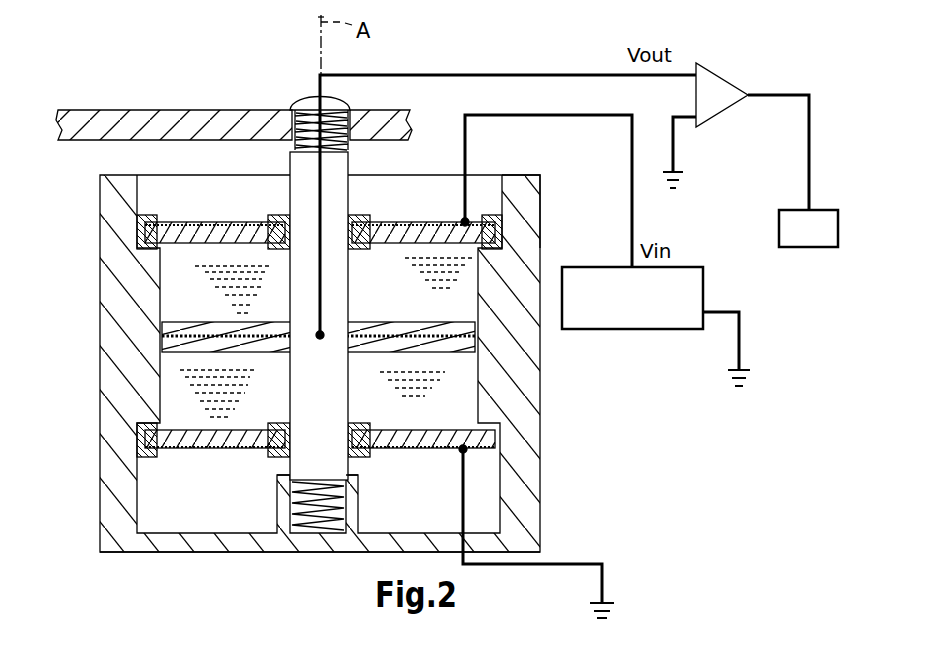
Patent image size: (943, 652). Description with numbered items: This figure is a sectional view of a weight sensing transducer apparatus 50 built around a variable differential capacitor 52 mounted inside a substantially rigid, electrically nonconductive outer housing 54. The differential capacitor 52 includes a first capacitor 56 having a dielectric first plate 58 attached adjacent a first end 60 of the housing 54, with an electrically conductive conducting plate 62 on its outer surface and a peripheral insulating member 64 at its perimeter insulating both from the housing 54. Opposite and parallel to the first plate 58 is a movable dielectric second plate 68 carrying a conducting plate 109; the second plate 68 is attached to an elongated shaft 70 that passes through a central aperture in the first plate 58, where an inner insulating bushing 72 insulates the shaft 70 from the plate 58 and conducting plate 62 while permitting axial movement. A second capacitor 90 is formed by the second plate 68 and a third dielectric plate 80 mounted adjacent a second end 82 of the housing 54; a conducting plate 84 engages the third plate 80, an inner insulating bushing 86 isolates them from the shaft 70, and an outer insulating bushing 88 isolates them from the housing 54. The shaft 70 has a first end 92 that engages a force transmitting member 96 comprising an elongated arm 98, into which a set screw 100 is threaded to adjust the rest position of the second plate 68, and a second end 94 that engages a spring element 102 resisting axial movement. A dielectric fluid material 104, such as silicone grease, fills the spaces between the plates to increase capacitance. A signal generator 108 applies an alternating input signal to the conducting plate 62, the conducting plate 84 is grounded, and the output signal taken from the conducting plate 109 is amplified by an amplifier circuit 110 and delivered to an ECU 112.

The weight sensing transducer apparatus 50 is at (585, 378).
The variable differential capacitor 52 is at (388, 210).
The outer housing 54 is at (540, 390).
The first capacitor 56 is at (185, 273).
The first plate 58 is at (478, 235).
The first end 60 is at (525, 175).
The conducting plate 62 is at (318, 213).
The peripheral insulating member 64 is at (142, 228).
The second plate 68 is at (470, 347).
The shaft 70 is at (330, 405).
The inner insulating bushing 72 is at (356, 250).
The third plate 80 is at (482, 440).
The second end 82 is at (122, 552).
The conducting plate 84 is at (172, 452).
The inner insulating bushing 86 is at (354, 456).
The outer insulating bushing 88 is at (142, 437).
The second capacitor 90 is at (185, 405).
The first end 92 is at (345, 140).
The second end 94 is at (292, 487).
The force transmitting member 96 is at (385, 110).
The elongated arm 98 is at (168, 110).
The set screw 100 is at (306, 93).
The spring element 102 is at (322, 515).
The fluid material 104 is at (130, 345).
The signal generator 108 is at (703, 285).
The conducting plate 109 is at (360, 340).
The amplifier circuit 110 is at (714, 70).
The ECU 112 is at (790, 247).